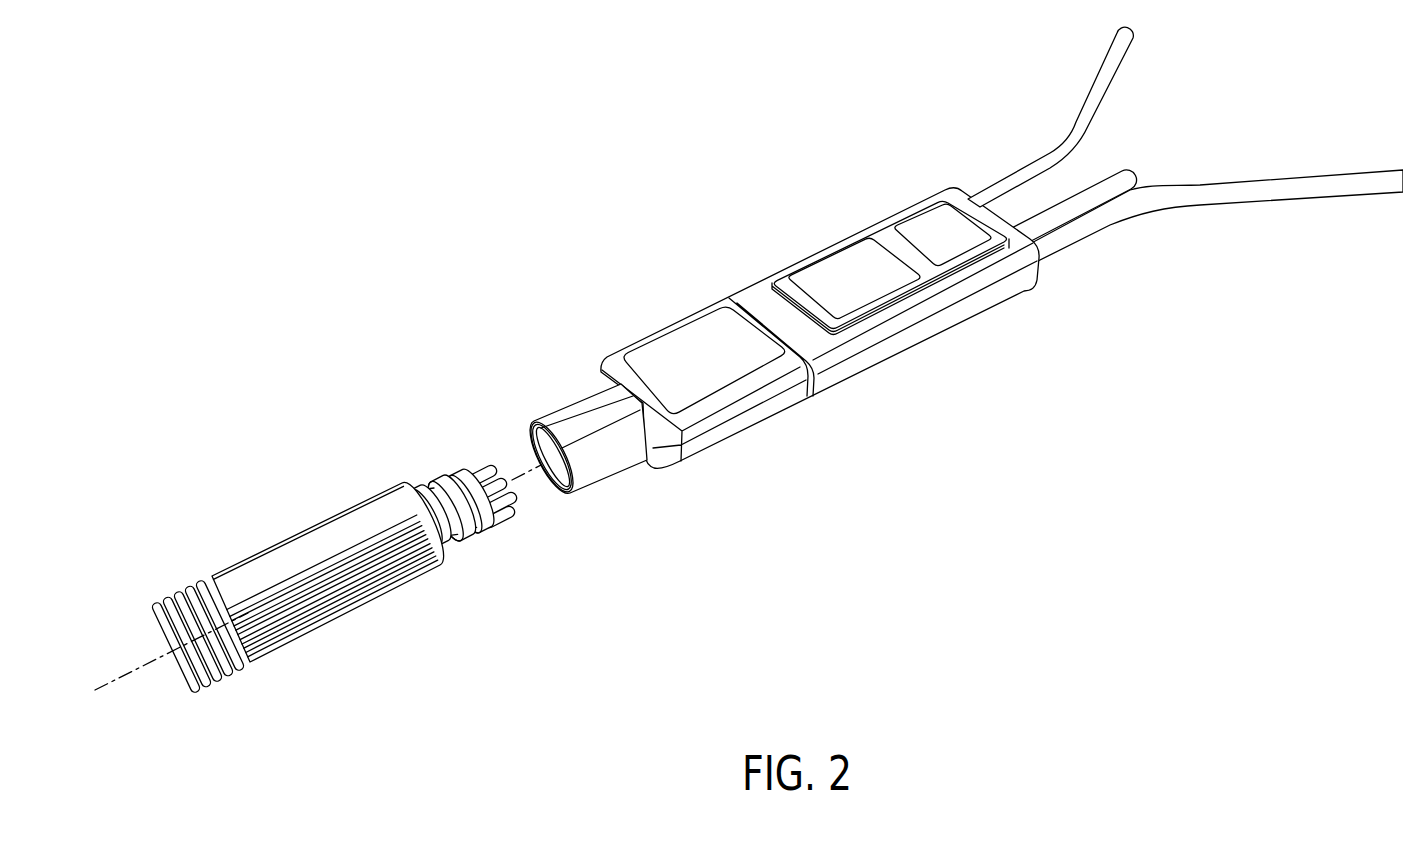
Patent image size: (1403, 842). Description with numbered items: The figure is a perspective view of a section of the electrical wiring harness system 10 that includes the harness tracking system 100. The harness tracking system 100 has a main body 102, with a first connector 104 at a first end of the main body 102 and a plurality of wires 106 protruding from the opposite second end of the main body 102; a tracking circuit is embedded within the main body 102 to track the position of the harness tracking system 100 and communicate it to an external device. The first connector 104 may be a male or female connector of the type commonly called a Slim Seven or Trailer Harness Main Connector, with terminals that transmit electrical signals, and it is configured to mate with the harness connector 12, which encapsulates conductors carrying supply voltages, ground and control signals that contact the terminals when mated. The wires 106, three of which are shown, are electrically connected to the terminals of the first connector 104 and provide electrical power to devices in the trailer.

The electrical wiring harness system 10 is at (299, 129).
The harness connector 12 is at (368, 510).
The harness tracking system 100 is at (684, 239).
The main body 102 is at (900, 218).
The first connector 104 is at (577, 403).
The wires 106 is at (1100, 104).